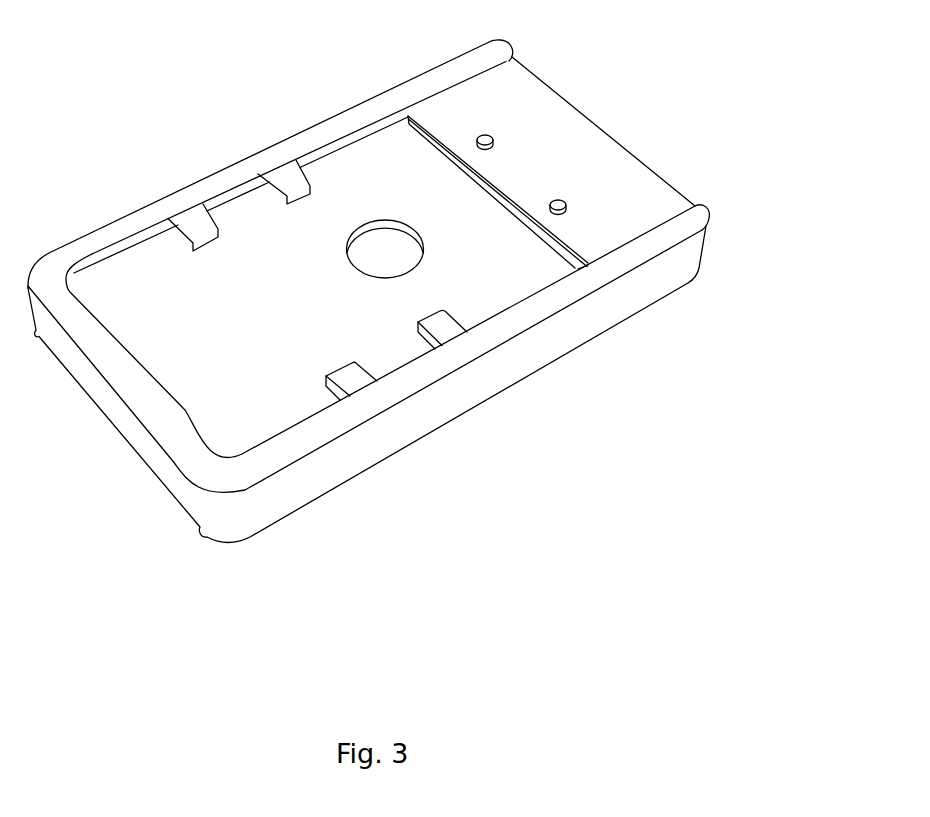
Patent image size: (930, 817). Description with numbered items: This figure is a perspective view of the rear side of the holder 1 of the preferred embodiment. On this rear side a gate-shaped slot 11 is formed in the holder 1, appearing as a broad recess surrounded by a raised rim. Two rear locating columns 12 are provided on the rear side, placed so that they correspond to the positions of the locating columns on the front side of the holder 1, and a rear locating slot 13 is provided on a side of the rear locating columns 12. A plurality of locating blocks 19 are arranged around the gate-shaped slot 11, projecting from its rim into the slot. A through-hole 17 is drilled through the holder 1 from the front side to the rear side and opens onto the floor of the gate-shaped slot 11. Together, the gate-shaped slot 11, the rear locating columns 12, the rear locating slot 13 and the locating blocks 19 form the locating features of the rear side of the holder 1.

The holder 1 is at (240, 513).
The gate-shaped slot 11 is at (272, 405).
The rear locating columns 12 is at (486, 137).
The rear locating slot 13 is at (411, 115).
The through-hole 17 is at (378, 257).
The locating blocks 19 is at (433, 322).